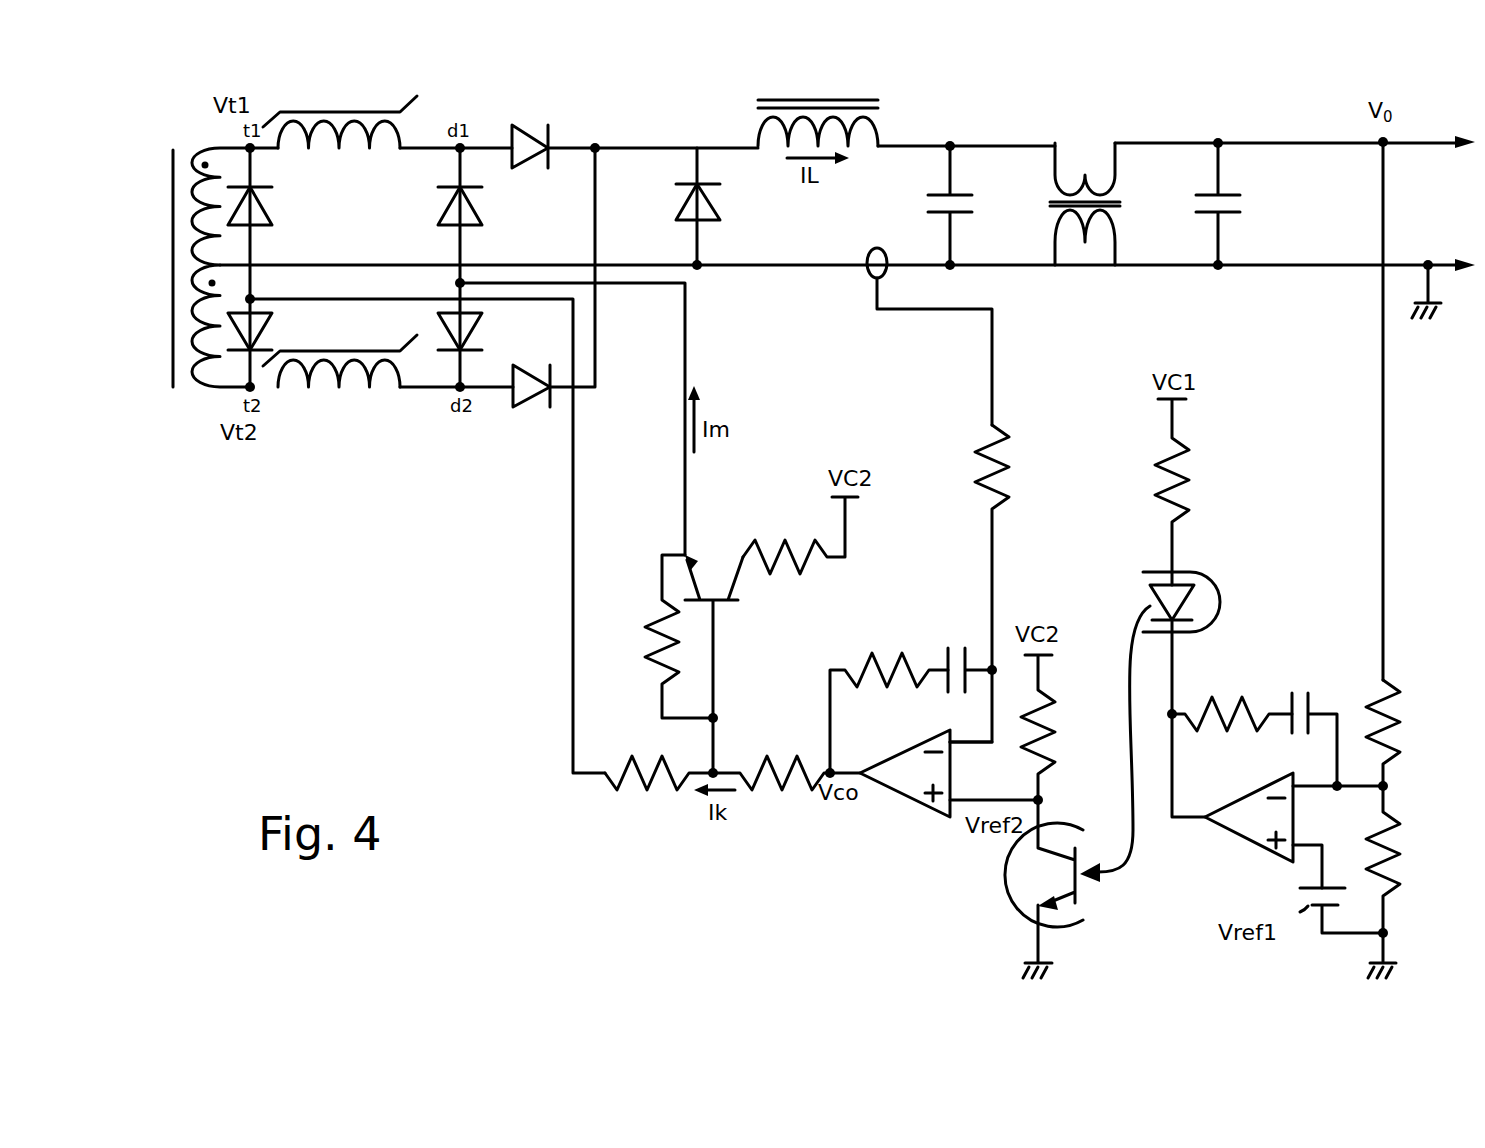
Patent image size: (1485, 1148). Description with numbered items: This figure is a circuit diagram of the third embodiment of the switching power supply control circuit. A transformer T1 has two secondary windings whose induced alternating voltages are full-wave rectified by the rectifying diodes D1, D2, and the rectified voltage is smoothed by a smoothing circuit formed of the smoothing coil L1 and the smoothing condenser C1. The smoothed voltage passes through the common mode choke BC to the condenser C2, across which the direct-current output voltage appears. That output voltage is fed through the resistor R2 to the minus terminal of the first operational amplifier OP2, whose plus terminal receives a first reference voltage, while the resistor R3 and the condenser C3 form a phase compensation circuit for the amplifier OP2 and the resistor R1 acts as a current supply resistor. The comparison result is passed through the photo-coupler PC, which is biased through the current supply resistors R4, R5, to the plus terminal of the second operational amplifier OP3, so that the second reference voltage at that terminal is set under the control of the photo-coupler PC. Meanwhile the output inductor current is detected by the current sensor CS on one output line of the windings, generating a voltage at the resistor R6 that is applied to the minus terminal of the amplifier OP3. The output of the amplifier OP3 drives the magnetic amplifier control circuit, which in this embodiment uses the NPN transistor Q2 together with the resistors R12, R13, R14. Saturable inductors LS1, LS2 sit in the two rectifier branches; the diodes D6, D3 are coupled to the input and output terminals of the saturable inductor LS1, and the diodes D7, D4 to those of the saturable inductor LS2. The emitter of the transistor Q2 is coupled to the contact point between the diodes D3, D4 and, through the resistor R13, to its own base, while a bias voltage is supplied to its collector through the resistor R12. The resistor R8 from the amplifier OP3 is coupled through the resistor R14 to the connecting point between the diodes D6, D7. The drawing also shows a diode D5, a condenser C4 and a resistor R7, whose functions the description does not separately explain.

The transformer T1 is at (203, 255).
The saturable inductor LS1 is at (308, 117).
The saturable inductor LS2 is at (368, 390).
The rectifying diode D1 is at (528, 131).
The rectifying diode D2 is at (535, 405).
The diode D3 is at (482, 207).
The diode D4 is at (483, 327).
The flywheel diode D5 is at (683, 206).
The diode D6 is at (272, 207).
The diode D7 is at (268, 327).
The smoothing coil L1 is at (798, 100).
The smoothing condenser C1 is at (965, 195).
The condenser C2 is at (1235, 193).
The condenser C3 is at (1312, 692).
The capacitor C4 is at (943, 654).
The common mode choke BC is at (1080, 170).
The current sensor CS is at (870, 280).
The resistor R1 is at (1399, 862).
The resistor R2 is at (1399, 740).
The resistor R3 is at (1228, 706).
The resistor R4 is at (1189, 488).
The resistor R5 is at (1054, 735).
The resistor R6 is at (1008, 478).
The resistor R7 is at (878, 668).
The resistor R8 is at (780, 768).
The resistor R12 is at (786, 553).
The resistor R13 is at (660, 645).
The resistor R14 is at (655, 783).
The NPN transistor Q2 is at (735, 602).
The first operational amplifier OP2 is at (1228, 835).
The second operational amplifier OP3 is at (912, 810).
The photo-coupler PC is at (1218, 590).